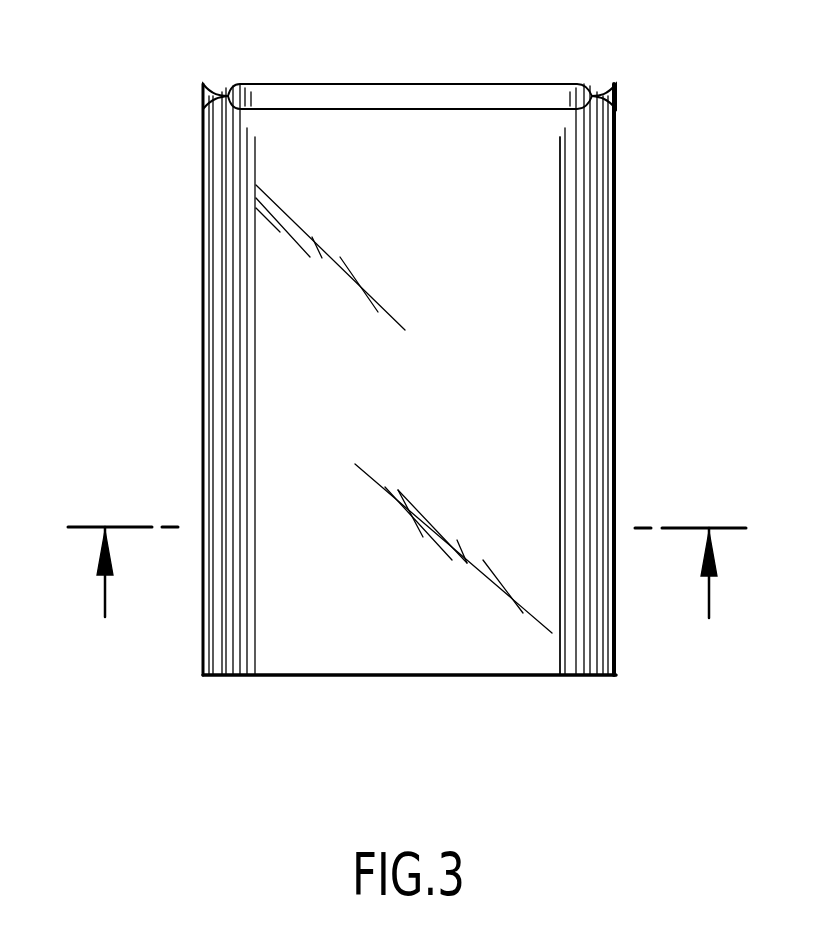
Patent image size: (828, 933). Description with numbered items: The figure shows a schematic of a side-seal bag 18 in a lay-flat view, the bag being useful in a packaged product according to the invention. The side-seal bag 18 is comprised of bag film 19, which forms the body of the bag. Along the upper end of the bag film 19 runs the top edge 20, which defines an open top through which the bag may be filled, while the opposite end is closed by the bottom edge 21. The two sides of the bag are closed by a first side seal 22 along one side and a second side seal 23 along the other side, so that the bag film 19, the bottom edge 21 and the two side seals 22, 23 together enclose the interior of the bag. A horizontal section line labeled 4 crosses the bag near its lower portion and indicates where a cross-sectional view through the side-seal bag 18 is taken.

The side-seal bag 18 is at (377, 394).
The bag film 19 is at (537, 167).
The top edge 20 is at (498, 84).
The bottom edge 21 is at (310, 675).
The first side seal 22 is at (215, 400).
The second side seal 23 is at (600, 298).
The section 4- 4 is at (411, 575).